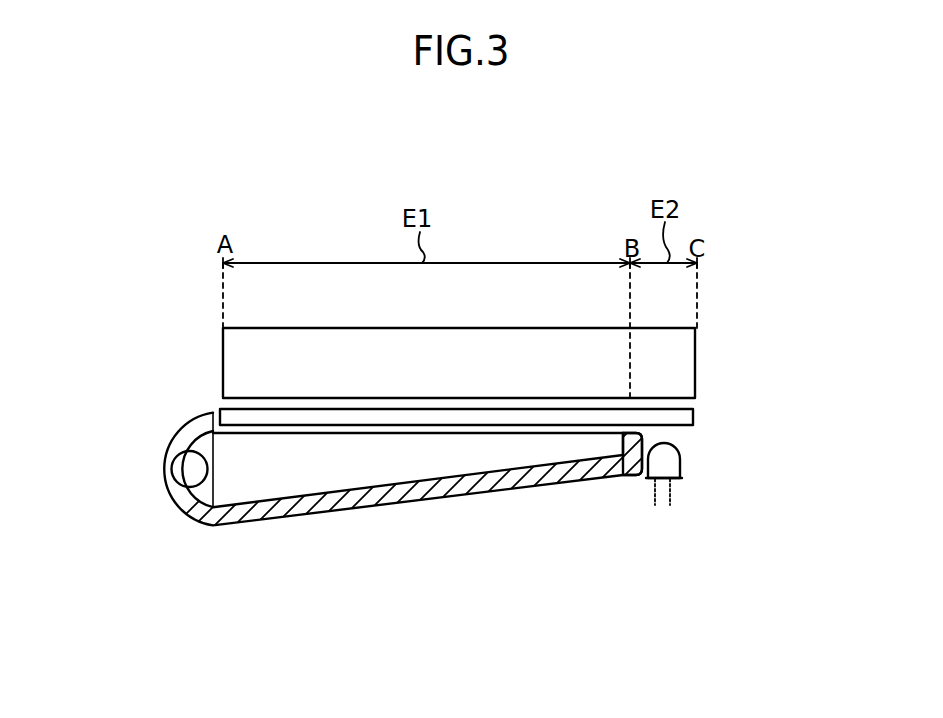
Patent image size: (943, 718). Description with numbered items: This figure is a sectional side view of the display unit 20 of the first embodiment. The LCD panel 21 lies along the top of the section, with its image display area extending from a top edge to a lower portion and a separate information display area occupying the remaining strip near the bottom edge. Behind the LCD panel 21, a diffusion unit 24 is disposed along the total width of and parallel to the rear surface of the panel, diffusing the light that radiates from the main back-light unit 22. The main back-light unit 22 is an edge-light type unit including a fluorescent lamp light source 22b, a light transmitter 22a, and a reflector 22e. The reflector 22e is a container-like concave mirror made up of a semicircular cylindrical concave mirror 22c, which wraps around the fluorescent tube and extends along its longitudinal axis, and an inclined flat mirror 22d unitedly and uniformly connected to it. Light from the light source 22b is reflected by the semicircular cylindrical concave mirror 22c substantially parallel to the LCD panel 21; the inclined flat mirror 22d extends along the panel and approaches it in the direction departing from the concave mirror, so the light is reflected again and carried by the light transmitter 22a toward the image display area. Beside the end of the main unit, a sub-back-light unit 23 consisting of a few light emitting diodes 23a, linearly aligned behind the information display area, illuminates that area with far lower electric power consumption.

The display unit 20 is at (727, 199).
The LCD panel 21 is at (697, 365).
The main back-light unit 22 is at (505, 497).
The light transmitter 22a is at (608, 442).
The fluorescent lamp light source 22b is at (190, 468).
The semicircular cylindrical concave mirror 22c is at (166, 502).
The inclined flat mirror 22d is at (430, 498).
The reflector 22e is at (334, 510).
The sub-back-light unit 23 is at (696, 482).
The light emitting diodes (LEDs) 23a is at (681, 478).
The diffusion unit 24 is at (695, 420).